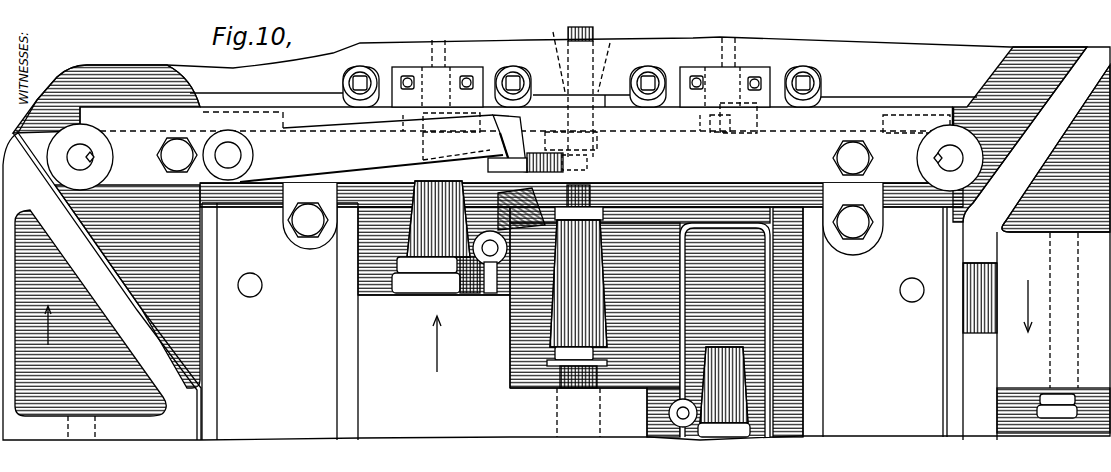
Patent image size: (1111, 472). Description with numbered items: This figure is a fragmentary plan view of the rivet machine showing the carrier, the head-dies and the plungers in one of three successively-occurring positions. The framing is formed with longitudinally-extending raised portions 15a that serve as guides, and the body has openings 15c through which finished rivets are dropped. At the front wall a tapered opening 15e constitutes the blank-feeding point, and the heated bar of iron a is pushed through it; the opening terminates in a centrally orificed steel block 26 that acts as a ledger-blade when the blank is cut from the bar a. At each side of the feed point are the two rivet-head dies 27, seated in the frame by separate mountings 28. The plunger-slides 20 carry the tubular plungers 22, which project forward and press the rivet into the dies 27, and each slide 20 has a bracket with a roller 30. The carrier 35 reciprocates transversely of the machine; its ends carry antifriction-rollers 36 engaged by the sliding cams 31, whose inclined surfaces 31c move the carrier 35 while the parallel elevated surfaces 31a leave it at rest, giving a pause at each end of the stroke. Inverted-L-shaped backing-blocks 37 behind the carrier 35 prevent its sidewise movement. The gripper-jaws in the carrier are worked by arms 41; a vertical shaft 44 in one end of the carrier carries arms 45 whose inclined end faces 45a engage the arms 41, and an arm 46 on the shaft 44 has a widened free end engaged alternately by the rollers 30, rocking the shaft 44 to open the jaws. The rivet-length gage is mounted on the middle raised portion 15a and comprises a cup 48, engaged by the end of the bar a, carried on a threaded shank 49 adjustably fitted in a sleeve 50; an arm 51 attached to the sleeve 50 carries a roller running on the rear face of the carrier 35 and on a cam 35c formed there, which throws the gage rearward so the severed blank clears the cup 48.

The raised portion 15a is at (581, 321).
The opening 15c is at (742, 305).
The opening 15e is at (568, 54).
The plunger-slide 20 is at (434, 343).
The plunger 22 is at (430, 237).
The steel block 26 is at (606, 100).
The rivet-head die 27 is at (405, 118).
The mounting 28 is at (406, 75).
The roller 30 is at (492, 270).
The sliding cam 31 is at (562, 325).
The elevated surface 31a is at (200, 425).
The inclined surface 31c is at (1056, 118).
The carrier 35 is at (712, 159).
The cam 35c is at (560, 183).
The antifriction-roller 36 is at (45, 163).
The backing-block 37 is at (290, 210).
The arm 41 is at (500, 130).
The vertical shaft 44 is at (232, 156).
The arm 45 is at (371, 148).
The inclined end face 45a is at (470, 146).
The arm 46 is at (500, 179).
The cup 48 is at (600, 207).
The threaded shank 49 is at (572, 300).
The sleeve 50 is at (574, 380).
The arm 51 is at (548, 352).
The bar of iron a is at (594, 38).